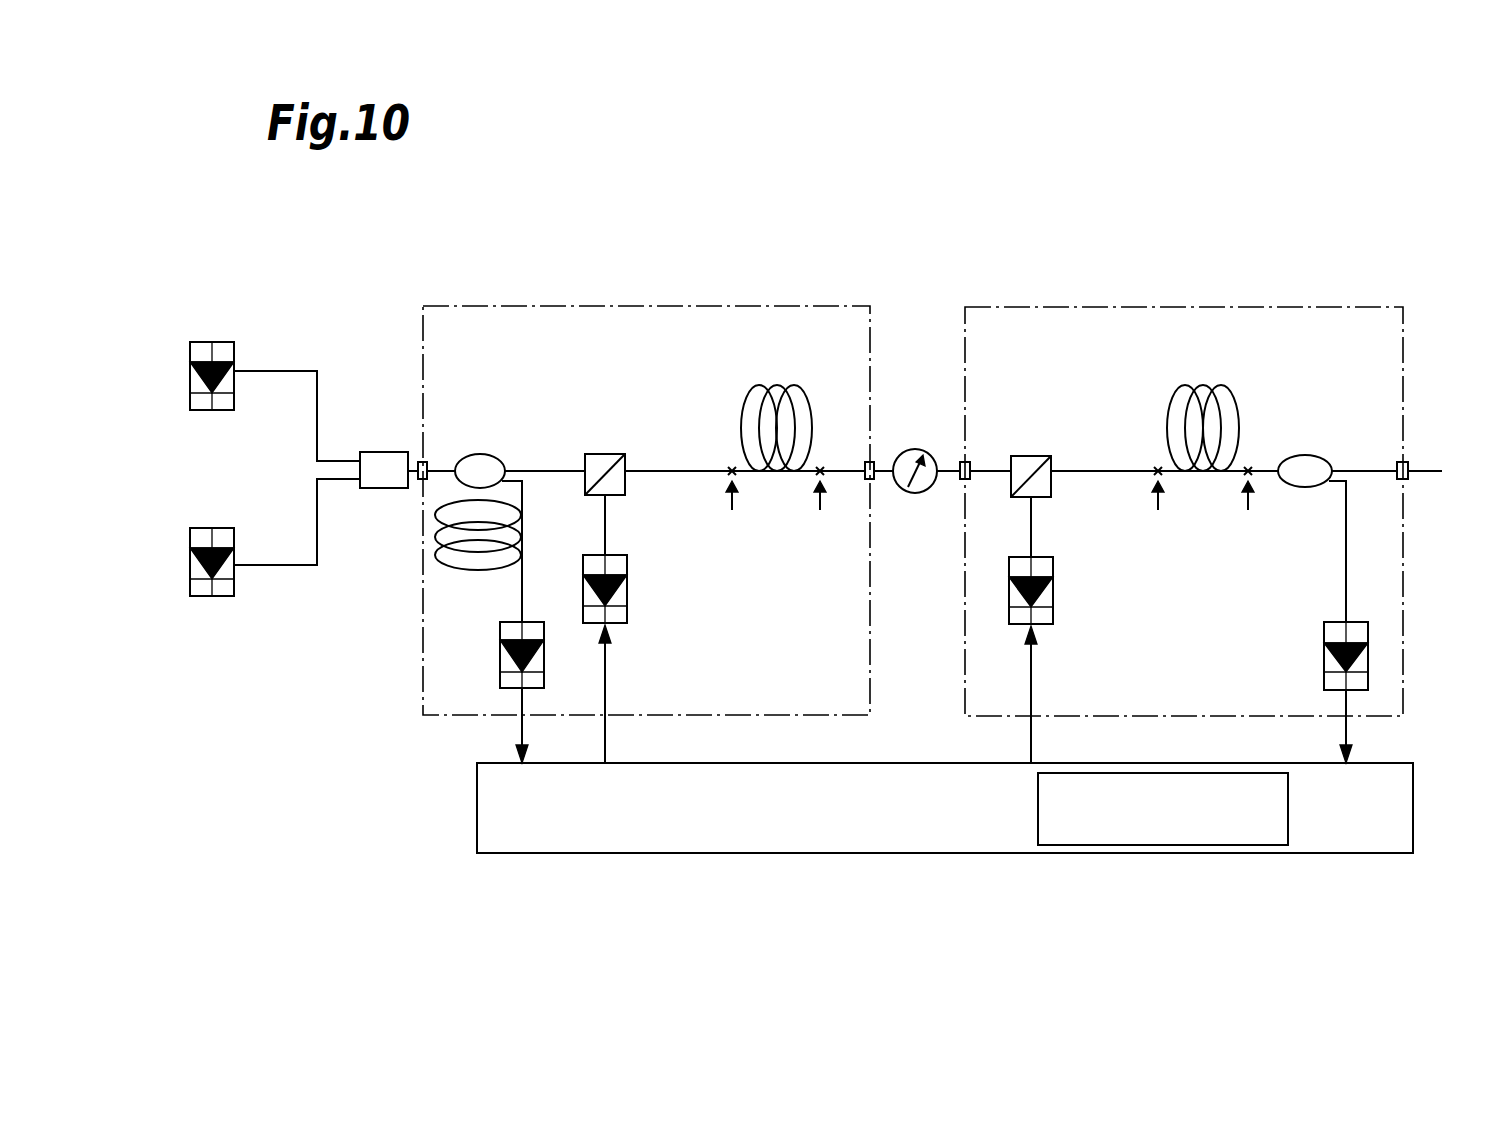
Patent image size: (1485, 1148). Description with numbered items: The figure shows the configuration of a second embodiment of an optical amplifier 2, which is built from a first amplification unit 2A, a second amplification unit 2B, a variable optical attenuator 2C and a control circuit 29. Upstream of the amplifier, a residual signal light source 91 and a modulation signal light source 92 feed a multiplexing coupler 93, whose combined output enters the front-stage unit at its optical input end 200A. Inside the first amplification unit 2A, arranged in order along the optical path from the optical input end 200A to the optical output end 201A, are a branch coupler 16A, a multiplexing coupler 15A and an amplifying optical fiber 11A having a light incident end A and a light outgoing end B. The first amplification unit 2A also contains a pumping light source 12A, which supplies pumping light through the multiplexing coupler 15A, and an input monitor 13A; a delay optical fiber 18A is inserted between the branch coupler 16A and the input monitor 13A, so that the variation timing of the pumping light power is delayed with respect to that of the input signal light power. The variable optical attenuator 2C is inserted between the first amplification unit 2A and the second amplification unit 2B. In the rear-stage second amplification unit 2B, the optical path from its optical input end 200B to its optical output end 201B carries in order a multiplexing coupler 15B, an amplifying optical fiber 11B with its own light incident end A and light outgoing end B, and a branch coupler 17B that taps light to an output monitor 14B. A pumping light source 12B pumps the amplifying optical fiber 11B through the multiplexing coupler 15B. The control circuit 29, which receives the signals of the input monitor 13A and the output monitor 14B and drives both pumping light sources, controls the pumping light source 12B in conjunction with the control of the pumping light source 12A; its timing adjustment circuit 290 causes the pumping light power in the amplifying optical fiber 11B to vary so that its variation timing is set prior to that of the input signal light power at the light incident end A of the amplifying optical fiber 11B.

The optical amplifier 2 is at (1194, 170).
The first amplification unit 2A is at (818, 306).
The second amplification unit 2B is at (1330, 307).
The variable optical attenuator 2C is at (915, 448).
The amplifying optical fiber 11A is at (794, 384).
The amplifying optical fiber 11B is at (1222, 385).
The pumping light source 12A is at (627, 562).
The pumping light source 12B is at (1053, 565).
The input monitor 13A is at (535, 622).
The output monitor 14B is at (1335, 622).
The multiplexing coupler 15A is at (610, 455).
The multiplexing coupler 15B is at (1038, 456).
The branch coupler 16A is at (480, 452).
The branch coupler 17B is at (1306, 455).
The delay optical fiber 18A is at (462, 571).
The control circuit 29 is at (477, 793).
The timing adjustment circuit 290 is at (1290, 827).
The residual signal light source 91 is at (190, 352).
The modulation signal light source 92 is at (190, 539).
The multiplexing coupler 93 is at (384, 490).
The optical input end 200A is at (419, 460).
The optical input end 200B is at (967, 462).
The optical output end 201A is at (870, 481).
The optical output end 201B is at (1405, 481).
The light incident end A is at (943, 505).
The light outgoing end B is at (1032, 505).